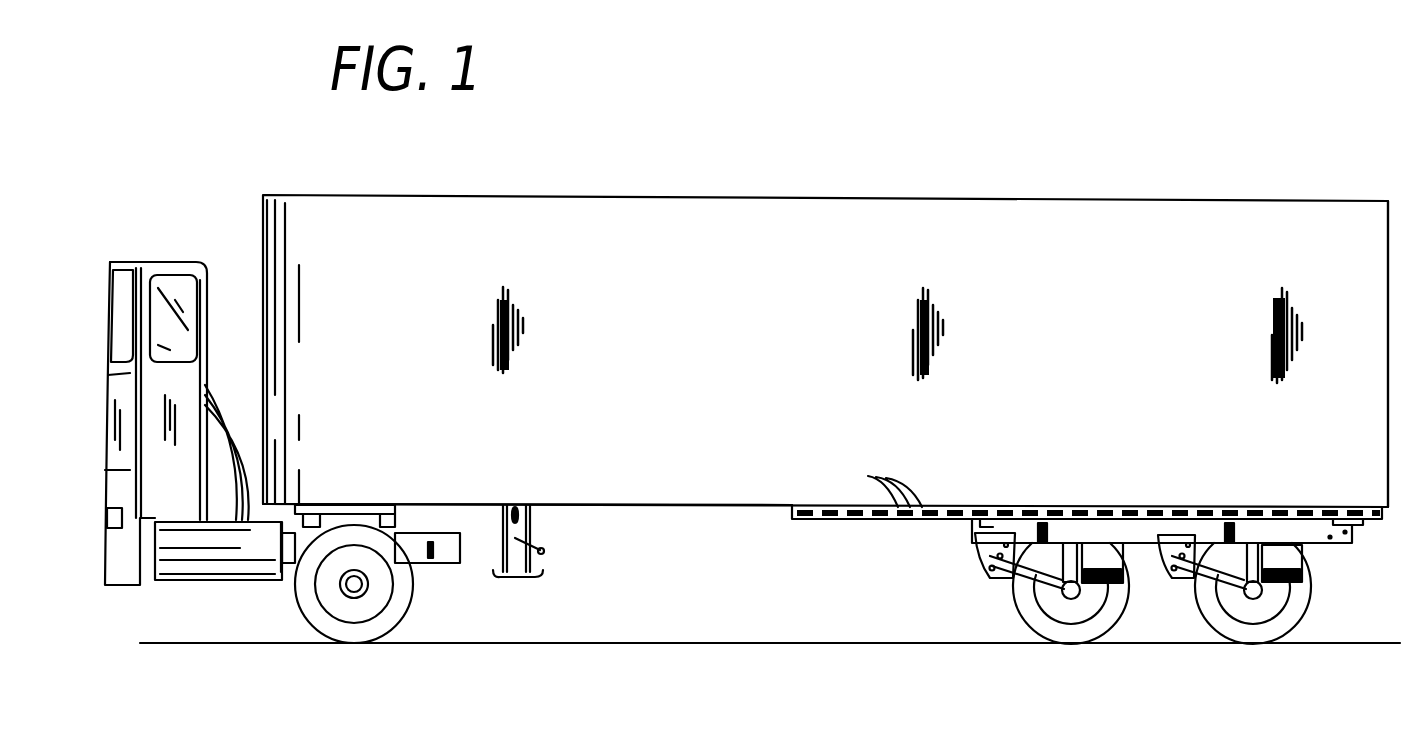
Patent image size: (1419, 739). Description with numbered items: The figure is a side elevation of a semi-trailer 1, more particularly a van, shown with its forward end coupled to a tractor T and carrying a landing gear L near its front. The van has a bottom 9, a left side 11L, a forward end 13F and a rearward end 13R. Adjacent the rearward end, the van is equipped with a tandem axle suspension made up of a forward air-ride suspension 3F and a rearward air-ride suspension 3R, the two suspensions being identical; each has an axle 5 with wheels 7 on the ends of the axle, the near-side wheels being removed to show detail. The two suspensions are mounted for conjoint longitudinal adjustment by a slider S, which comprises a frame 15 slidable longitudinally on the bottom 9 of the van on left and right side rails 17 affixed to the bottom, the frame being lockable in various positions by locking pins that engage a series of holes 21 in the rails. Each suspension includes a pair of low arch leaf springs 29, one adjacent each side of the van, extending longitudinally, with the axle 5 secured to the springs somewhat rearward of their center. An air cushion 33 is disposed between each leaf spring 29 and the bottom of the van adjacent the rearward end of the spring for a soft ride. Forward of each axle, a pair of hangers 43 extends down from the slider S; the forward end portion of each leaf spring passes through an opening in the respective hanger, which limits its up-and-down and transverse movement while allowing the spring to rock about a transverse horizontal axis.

The semi-trailer 1 is at (817, 200).
The tractor T is at (152, 256).
The landing gear L is at (533, 575).
The slider S is at (1357, 542).
The forward air-ride suspension 3F is at (998, 605).
The rearward air-ride suspension 3R is at (1307, 628).
The axle 5 is at (1073, 602).
The wheels 7 is at (1020, 617).
The bottom of the van 9 is at (662, 516).
The left side of the van 11L is at (828, 362).
The forward end of the van 13F is at (263, 327).
The rearward end of the van 13R is at (1388, 428).
The frame 15 is at (1132, 535).
The side rails 17 is at (793, 520).
The holes 21 is at (879, 483).
The leaf spring 29 is at (1030, 545).
The air cushion 33 is at (1096, 542).
The hanger 43 is at (968, 570).